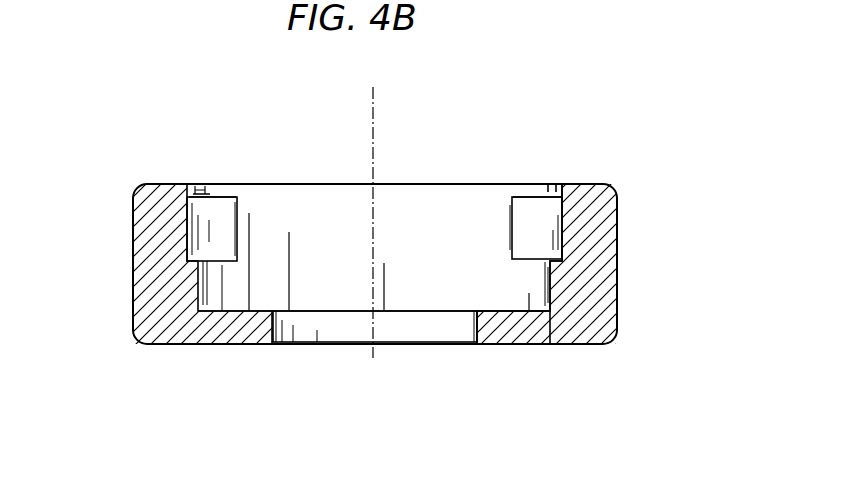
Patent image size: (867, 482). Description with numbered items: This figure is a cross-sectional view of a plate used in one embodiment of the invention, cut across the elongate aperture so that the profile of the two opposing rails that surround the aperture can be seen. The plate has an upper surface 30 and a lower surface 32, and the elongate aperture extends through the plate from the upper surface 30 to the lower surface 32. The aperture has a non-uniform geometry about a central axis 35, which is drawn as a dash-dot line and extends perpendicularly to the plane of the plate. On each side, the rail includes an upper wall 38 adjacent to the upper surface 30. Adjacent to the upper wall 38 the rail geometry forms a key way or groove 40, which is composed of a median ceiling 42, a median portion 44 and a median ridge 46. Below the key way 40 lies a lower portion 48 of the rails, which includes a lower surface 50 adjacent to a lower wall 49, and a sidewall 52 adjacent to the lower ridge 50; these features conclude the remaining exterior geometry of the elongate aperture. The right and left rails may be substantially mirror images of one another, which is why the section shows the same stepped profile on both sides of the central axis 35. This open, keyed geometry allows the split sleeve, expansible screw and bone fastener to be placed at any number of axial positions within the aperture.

The upper surface 30 is at (198, 186).
The lower surface 32 is at (587, 344).
The central axis 35 is at (373, 140).
The upper wall 38 is at (206, 193).
The key way 40 is at (187, 212).
The median ceiling 42 is at (555, 187).
The median portion 44 is at (563, 228).
The median ridge 46 is at (563, 260).
The lower portion 48 is at (207, 305).
The lower wall 49 is at (556, 290).
The lower surface 50 is at (507, 330).
The sidewall 52 is at (472, 330).